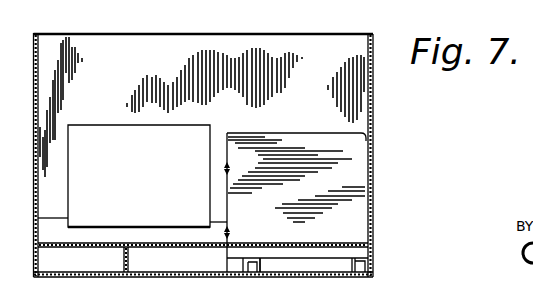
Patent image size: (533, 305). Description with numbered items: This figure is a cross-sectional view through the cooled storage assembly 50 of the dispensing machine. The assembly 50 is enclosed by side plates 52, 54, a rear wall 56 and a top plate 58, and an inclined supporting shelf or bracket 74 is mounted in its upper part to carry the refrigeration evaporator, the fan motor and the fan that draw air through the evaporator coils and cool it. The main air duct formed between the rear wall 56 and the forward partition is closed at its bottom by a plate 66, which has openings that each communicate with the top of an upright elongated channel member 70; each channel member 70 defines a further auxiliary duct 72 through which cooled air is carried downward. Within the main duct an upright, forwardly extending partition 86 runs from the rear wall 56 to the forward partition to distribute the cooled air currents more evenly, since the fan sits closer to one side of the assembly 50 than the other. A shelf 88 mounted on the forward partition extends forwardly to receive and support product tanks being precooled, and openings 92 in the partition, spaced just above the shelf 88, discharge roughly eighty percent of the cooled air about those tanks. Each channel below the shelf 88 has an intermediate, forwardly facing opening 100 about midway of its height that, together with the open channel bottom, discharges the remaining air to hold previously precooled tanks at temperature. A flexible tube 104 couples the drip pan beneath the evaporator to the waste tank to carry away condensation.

The assembly 50 is at (213, 164).
The side plate 52 is at (33, 103).
The side plate 54 is at (374, 116).
The rear wall 56 is at (175, 277).
The top plate 58 is at (277, 43).
The plate 66 is at (325, 253).
The channel member 70 is at (262, 270).
The auxiliary duct 72 is at (255, 278).
The supporting shelf or bracket 74 is at (88, 125).
The partition 86 is at (130, 262).
The shelf 88 is at (312, 133).
The openings 92 is at (88, 243).
The opening 100 is at (257, 247).
The flexible tube 104 is at (80, 235).